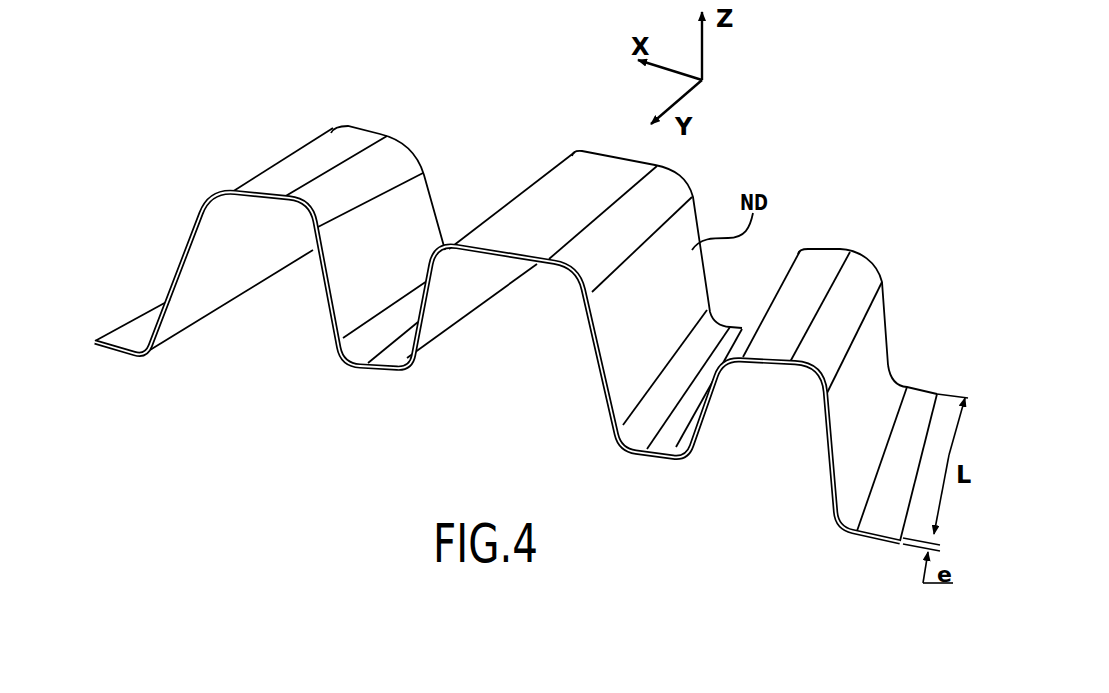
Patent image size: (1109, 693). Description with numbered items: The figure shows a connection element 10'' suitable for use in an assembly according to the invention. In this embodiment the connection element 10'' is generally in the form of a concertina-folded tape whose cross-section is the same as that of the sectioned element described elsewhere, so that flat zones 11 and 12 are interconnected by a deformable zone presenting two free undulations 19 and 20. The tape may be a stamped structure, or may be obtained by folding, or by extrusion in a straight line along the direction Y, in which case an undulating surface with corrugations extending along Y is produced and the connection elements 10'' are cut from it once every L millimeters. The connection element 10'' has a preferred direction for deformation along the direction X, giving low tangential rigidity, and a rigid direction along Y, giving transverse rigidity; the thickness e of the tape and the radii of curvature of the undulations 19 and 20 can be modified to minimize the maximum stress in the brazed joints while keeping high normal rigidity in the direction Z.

The connection element 10'' is at (516, 328).
The flat zone 11 is at (592, 187).
The flat zone 12 is at (126, 331).
The free undulation 19 is at (378, 372).
The free undulation 20 is at (327, 159).